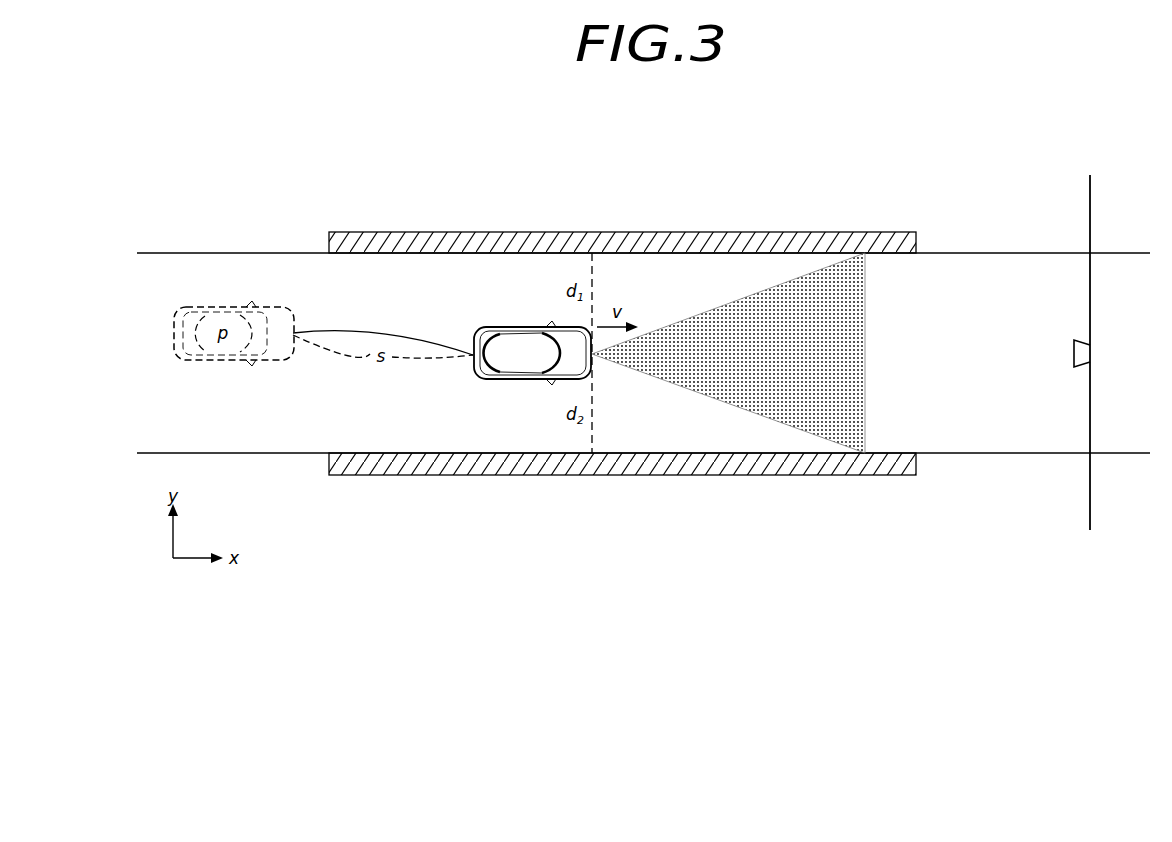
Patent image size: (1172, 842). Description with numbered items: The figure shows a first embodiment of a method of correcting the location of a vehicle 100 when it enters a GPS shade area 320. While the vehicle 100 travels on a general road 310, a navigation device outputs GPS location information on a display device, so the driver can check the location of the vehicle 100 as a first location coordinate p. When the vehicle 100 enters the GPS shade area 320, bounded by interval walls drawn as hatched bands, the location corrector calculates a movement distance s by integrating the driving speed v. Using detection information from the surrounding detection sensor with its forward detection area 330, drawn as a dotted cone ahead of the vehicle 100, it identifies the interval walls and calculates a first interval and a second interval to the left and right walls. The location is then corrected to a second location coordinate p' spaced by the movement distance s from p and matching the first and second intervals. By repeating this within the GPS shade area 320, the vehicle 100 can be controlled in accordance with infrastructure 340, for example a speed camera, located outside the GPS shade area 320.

The vehicle 100 is at (533, 380).
The general road 310 is at (230, 232).
The GPS shade area 320 is at (582, 198).
The forward detection area 330 is at (700, 380).
The infrastructure 340 is at (1072, 352).